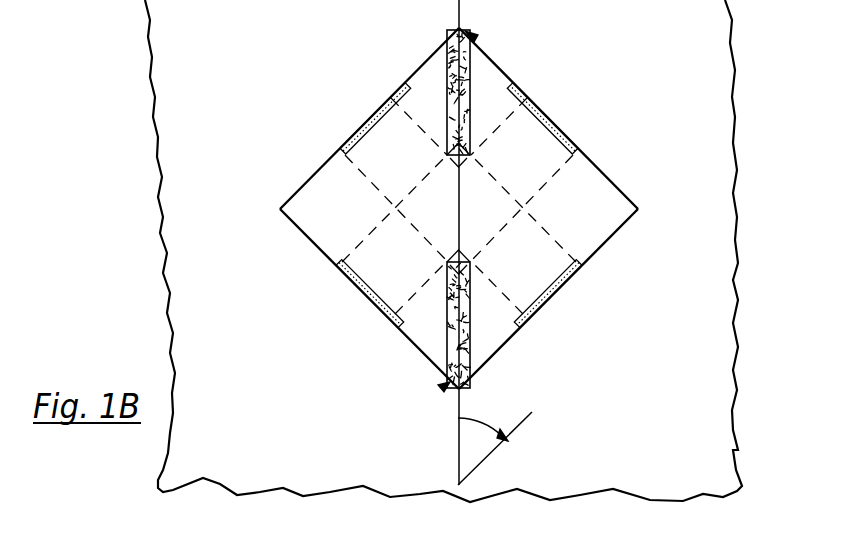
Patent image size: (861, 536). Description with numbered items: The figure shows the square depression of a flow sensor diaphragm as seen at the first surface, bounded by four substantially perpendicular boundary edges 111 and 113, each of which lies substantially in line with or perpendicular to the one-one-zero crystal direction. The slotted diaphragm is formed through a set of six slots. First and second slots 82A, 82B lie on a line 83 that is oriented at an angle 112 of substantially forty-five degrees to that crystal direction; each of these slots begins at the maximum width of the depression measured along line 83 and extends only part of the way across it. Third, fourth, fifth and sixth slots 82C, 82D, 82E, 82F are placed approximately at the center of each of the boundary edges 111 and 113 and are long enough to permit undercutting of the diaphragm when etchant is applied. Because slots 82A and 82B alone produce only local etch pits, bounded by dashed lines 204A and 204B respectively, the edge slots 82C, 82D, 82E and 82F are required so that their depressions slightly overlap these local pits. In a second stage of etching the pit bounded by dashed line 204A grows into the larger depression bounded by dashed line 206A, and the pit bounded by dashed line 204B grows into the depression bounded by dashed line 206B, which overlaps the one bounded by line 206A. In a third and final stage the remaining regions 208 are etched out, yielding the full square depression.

The first slot 82A is at (501, 90).
The second slot 82B is at (429, 332).
The third slot 82C is at (365, 118).
The fourth slot 82D is at (562, 118).
The fifth slot 82E is at (571, 294).
The sixth slot 82F is at (356, 294).
The line 83 is at (488, 242).
The boundary edge 111 is at (453, 208).
The angle 112 is at (470, 448).
The boundary edge 113 is at (440, 208).
The dashed line 204A is at (495, 95).
The dashed line 204B is at (461, 278).
The dashed line 206A is at (459, 200).
The dashed line 206B is at (459, 208).
The regions 208 is at (345, 219).